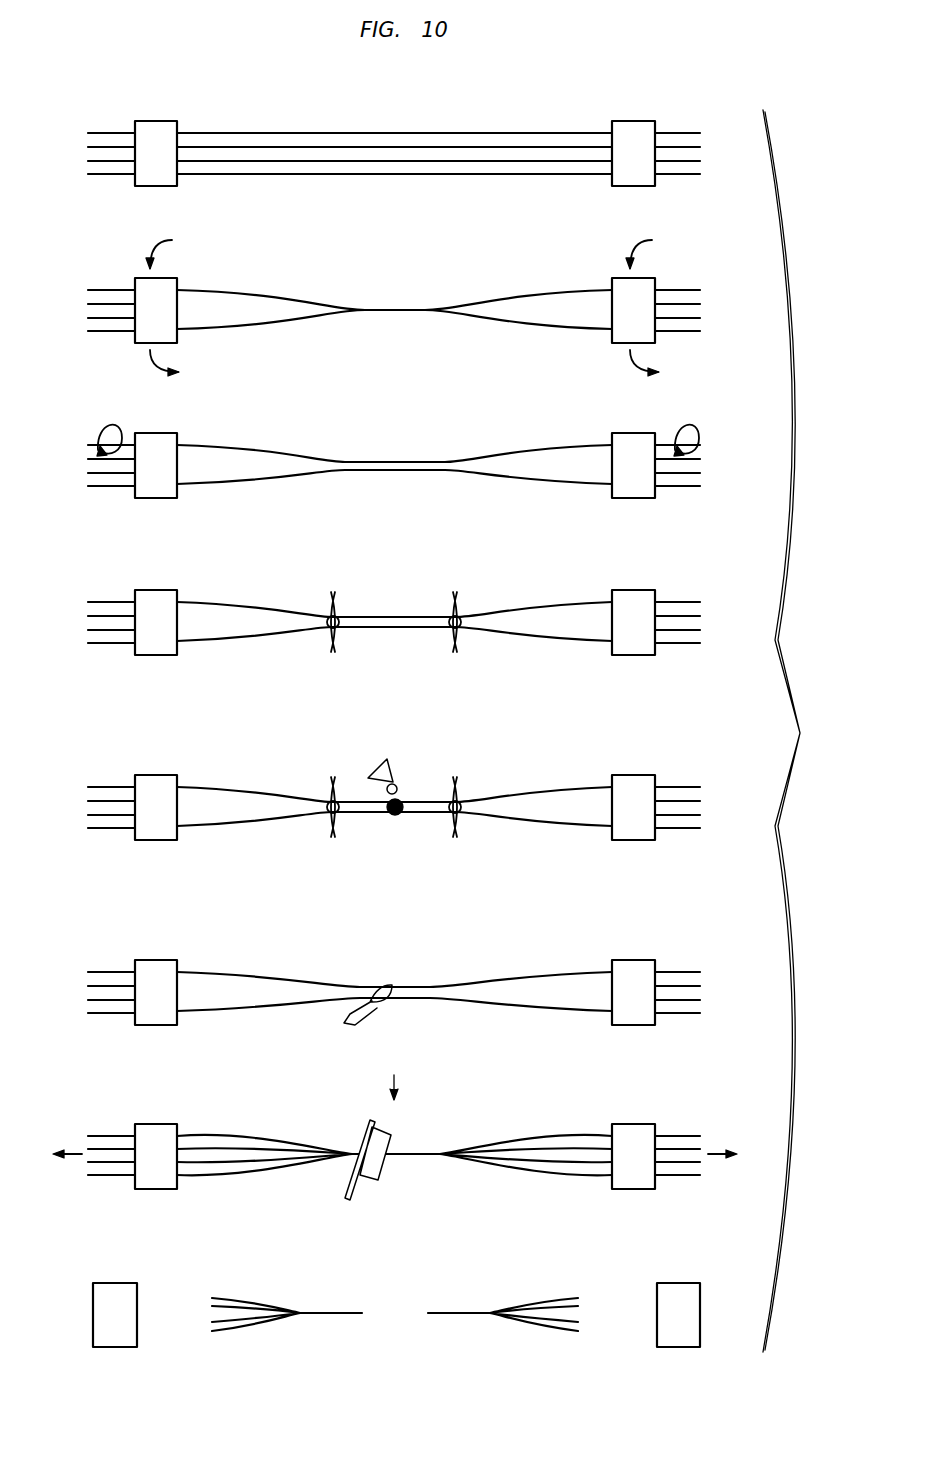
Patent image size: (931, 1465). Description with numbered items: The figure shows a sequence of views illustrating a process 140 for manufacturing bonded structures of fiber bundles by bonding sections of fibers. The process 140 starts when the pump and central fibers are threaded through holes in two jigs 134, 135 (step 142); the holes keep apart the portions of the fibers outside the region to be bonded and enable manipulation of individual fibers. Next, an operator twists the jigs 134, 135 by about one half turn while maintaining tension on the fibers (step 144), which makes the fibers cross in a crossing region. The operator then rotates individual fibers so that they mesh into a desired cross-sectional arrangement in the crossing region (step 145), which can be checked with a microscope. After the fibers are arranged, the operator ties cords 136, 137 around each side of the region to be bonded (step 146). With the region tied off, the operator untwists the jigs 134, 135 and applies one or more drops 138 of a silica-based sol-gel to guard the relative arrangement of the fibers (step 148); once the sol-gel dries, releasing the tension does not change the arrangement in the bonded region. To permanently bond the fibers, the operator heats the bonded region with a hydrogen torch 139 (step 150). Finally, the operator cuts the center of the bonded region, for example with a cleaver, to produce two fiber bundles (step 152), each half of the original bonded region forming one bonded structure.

The jig 134 is at (180, 120).
The jig 135 is at (656, 120).
The cord 136 is at (463, 607).
The cord 137 is at (329, 642).
The drop of silica-based sol-gel 138 is at (400, 788).
The hydrogen torch 139 is at (348, 1014).
The process 140 is at (809, 731).
The threading step 142 is at (394, 118).
The twisting step 144 is at (394, 275).
The fiber rotating step 145 is at (394, 430).
The tying step 146 is at (394, 587).
The sol-gel application step 148 is at (394, 750).
The heating step 150 is at (394, 930).
The cutting step 152 is at (394, 1262).